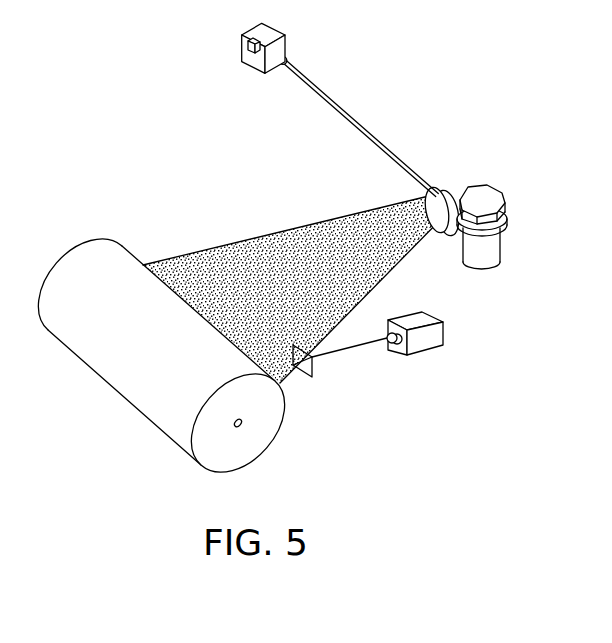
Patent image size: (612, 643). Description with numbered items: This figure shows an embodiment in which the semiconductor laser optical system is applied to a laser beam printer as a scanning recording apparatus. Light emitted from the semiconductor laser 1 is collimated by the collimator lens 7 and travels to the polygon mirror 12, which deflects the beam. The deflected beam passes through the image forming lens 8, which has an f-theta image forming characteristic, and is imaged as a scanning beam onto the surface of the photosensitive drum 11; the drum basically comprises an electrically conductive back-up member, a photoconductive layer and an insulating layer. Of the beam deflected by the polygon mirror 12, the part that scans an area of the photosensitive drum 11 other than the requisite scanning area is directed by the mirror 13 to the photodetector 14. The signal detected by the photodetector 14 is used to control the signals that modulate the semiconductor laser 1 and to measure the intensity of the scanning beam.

The semiconductor laser 1 is at (252, 40).
The collimator lens 7 is at (288, 48).
The image forming lens 8 is at (435, 193).
The photosensitive drum 11 is at (156, 352).
The polygon mirror 12 is at (495, 198).
The mirror 13 is at (307, 368).
The photodetector 14 is at (430, 345).